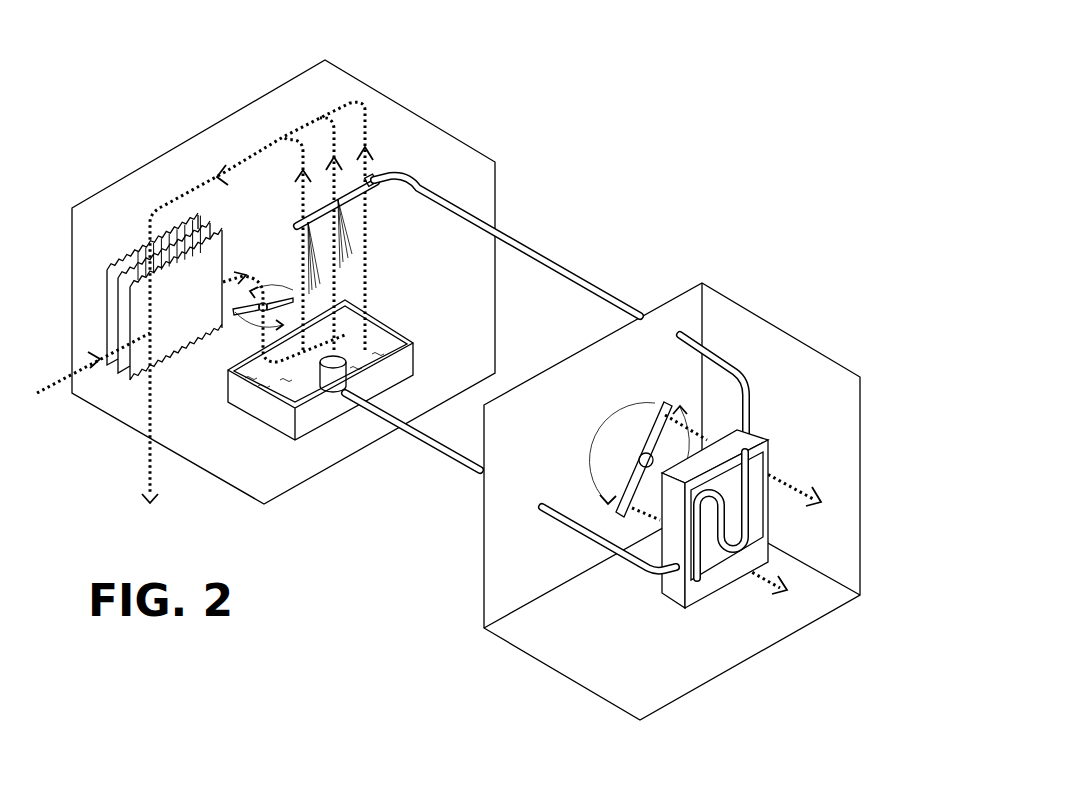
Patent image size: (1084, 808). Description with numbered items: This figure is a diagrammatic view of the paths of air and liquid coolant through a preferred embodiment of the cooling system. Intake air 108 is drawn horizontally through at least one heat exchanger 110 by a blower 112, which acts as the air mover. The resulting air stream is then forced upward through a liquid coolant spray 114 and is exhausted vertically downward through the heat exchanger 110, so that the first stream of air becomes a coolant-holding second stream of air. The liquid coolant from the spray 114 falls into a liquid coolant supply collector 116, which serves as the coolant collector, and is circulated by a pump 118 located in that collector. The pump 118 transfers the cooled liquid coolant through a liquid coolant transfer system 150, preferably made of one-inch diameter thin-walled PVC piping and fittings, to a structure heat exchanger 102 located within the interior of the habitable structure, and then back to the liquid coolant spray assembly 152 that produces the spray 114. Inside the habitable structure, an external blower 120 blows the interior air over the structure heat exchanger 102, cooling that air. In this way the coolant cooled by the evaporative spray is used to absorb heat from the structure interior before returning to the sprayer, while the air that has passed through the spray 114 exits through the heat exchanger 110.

The structure heat exchanger 102 is at (758, 437).
The intake air 108 is at (80, 379).
The heat exchanger 110 is at (137, 362).
The blower 112 is at (248, 362).
The liquid coolant spray 114 is at (357, 228).
The liquid coolant supply collector 116 is at (378, 345).
The pump 118 is at (347, 358).
The external blower 120 is at (615, 450).
The liquid coolant transfer system 150 is at (558, 258).
The liquid coolant spray assembly 152 is at (368, 170).